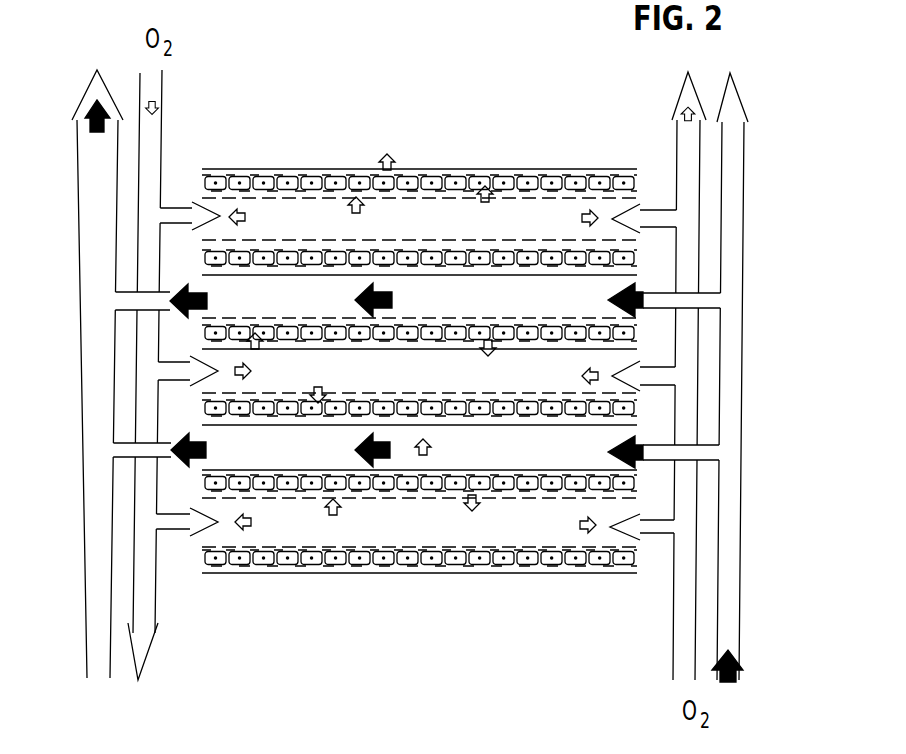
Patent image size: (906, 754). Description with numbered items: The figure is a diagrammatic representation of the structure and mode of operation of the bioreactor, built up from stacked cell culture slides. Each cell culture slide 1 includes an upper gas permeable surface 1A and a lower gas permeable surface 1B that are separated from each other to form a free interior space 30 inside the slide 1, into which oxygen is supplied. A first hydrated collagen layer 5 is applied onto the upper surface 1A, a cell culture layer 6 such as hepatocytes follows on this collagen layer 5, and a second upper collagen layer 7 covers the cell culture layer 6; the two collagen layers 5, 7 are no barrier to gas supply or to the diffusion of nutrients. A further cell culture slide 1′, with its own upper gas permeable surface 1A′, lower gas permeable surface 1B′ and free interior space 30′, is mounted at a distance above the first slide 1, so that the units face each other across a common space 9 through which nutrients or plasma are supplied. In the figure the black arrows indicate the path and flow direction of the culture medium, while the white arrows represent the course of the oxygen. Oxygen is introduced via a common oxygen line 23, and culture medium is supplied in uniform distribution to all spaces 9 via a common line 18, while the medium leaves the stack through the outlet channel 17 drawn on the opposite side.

The cell culture slide 1 is at (213, 510).
The further cell culture slide 1′ is at (213, 355).
The upper gas permeable surface 1A is at (517, 500).
The upper gas permeable surface 1A′ is at (587, 360).
The lower gas permeable surface 1B is at (400, 533).
The lower gas permeable surface 1B′ is at (193, 392).
The free interior space 30 is at (342, 527).
The free interior space 30′ is at (638, 395).
The first hydrated collagen layer 5 is at (627, 495).
The cell culture layer 6 is at (630, 485).
The second upper collagen layer 7 is at (567, 475).
The common space 9 is at (592, 441).
The medium outlet channel 17 is at (96, 153).
The common line 18 is at (732, 604).
The common oxygen line 23 is at (163, 82).